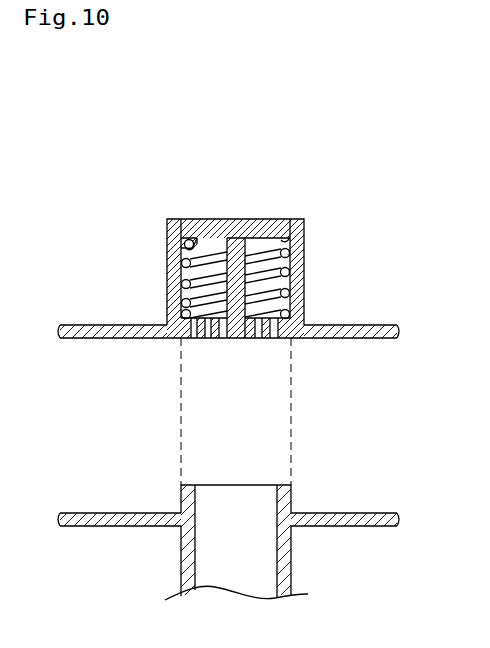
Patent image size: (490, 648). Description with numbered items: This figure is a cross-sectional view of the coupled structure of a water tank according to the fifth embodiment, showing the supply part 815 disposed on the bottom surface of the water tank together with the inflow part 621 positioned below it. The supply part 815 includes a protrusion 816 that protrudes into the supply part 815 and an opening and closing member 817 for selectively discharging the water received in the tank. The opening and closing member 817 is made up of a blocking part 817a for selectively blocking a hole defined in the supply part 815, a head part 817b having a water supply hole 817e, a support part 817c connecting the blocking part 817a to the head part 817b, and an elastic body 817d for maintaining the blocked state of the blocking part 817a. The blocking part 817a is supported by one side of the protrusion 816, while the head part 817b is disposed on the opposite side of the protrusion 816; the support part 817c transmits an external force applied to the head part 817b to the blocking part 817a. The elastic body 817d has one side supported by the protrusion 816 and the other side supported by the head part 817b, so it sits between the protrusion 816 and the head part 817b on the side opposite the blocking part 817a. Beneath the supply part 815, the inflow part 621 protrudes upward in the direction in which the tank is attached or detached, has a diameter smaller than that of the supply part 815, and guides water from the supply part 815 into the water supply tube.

The opening and closing member 817 is at (297, 166).
The protrusion 816 is at (304, 221).
The supply part 815 is at (304, 263).
The blocking part 817a is at (231, 230).
The head part 817b is at (233, 333).
The support part 817c is at (186, 279).
The elastic body 817d is at (203, 253).
The water supply hole 817e is at (254, 333).
The inflow part 621 is at (291, 493).